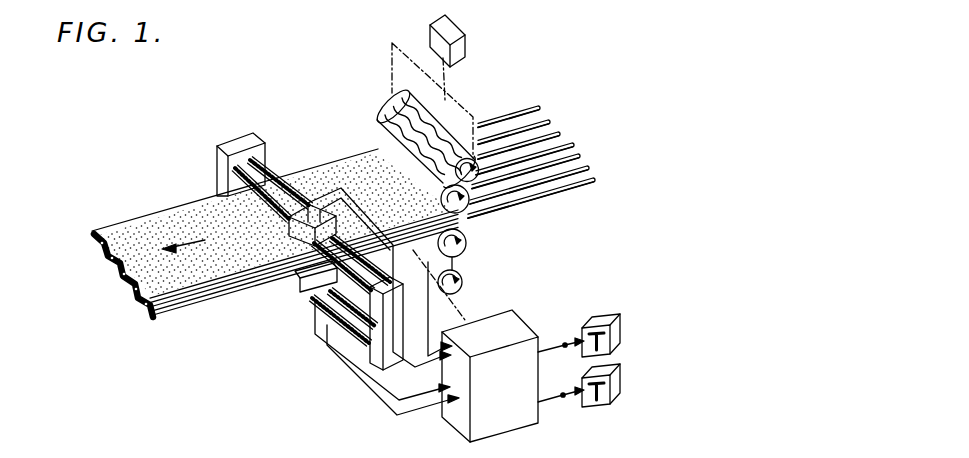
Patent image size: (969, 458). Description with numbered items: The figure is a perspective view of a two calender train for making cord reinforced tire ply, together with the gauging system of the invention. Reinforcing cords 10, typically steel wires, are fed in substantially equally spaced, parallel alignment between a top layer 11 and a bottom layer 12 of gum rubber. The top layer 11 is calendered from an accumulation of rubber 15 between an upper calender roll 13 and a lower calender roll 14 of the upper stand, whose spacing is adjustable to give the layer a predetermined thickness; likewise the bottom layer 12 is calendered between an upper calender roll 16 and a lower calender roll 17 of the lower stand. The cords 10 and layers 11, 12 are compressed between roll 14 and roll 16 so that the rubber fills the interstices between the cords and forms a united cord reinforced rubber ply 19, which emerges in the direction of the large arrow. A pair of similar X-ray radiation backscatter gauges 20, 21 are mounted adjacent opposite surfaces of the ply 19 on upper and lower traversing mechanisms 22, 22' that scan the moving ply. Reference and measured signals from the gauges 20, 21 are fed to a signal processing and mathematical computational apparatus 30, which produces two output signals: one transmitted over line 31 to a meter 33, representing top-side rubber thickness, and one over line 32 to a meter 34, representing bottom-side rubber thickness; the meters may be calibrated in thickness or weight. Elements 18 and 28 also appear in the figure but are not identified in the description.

The reinforcing cords 10 is at (560, 130).
The top layer 11 is at (480, 213).
The bottom layer 12 is at (467, 243).
The upper calender roll 13 is at (441, 127).
The lower calender roll 14 is at (377, 122).
The accumulation of rubber 15 is at (383, 110).
The upper calender roll 16 is at (457, 257).
The lower calender roll 17 is at (463, 281).
The support frame 18 is at (420, 240).
The cord reinforced rubber ply 19 is at (313, 164).
The X-ray radiation backscatter gauge 20 is at (288, 232).
The X-ray radiation backscatter gauge 21 is at (303, 289).
The upper traversing mechanism 22 is at (241, 177).
The lower traversing mechanism 22' is at (362, 346).
The web 28 is at (216, 238).
The signal processing and mathematical computational apparatus 30 is at (452, 435).
The line 31 is at (553, 346).
The line 32 is at (553, 401).
The meter 33 is at (603, 320).
The meter 34 is at (610, 405).